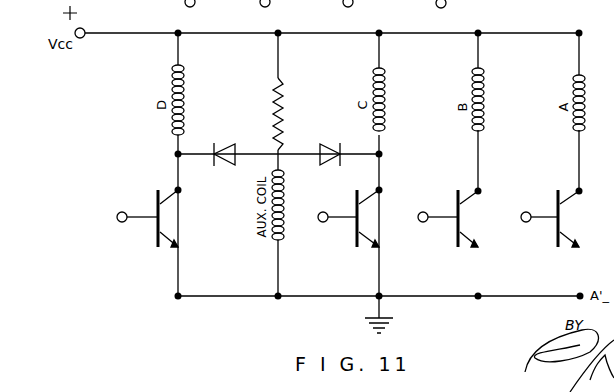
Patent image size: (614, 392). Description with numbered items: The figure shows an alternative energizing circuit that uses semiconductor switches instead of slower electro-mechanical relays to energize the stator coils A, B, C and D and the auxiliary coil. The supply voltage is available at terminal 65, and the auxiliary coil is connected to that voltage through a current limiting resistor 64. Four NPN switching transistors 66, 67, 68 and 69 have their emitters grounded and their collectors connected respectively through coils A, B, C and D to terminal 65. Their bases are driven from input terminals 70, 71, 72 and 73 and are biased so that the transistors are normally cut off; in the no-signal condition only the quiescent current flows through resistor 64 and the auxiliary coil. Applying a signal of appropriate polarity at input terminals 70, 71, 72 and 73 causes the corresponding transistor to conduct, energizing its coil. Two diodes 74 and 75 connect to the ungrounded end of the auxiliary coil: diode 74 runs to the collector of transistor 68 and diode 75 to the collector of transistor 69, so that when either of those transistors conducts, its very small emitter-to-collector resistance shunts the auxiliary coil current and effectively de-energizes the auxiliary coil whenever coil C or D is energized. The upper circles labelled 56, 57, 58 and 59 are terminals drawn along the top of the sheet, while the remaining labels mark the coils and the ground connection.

The terminal 65 is at (84, 29).
The output terminal 59 is at (195, 3).
The output terminal 58 is at (270, 3).
The output terminal 57 is at (353, 3).
The output terminal 56 is at (446, 4).
The current limiting resistor 64 is at (282, 103).
The diode 75 is at (233, 144).
The diode 74 is at (327, 143).
The switching transistor 69 is at (157, 198).
The switching transistor 68 is at (357, 200).
The switching transistor 67 is at (457, 198).
The switching transistor 66 is at (557, 198).
The input terminal 73 is at (118, 223).
The input terminal 72 is at (322, 223).
The input terminal 71 is at (422, 223).
The input terminal 70 is at (524, 223).